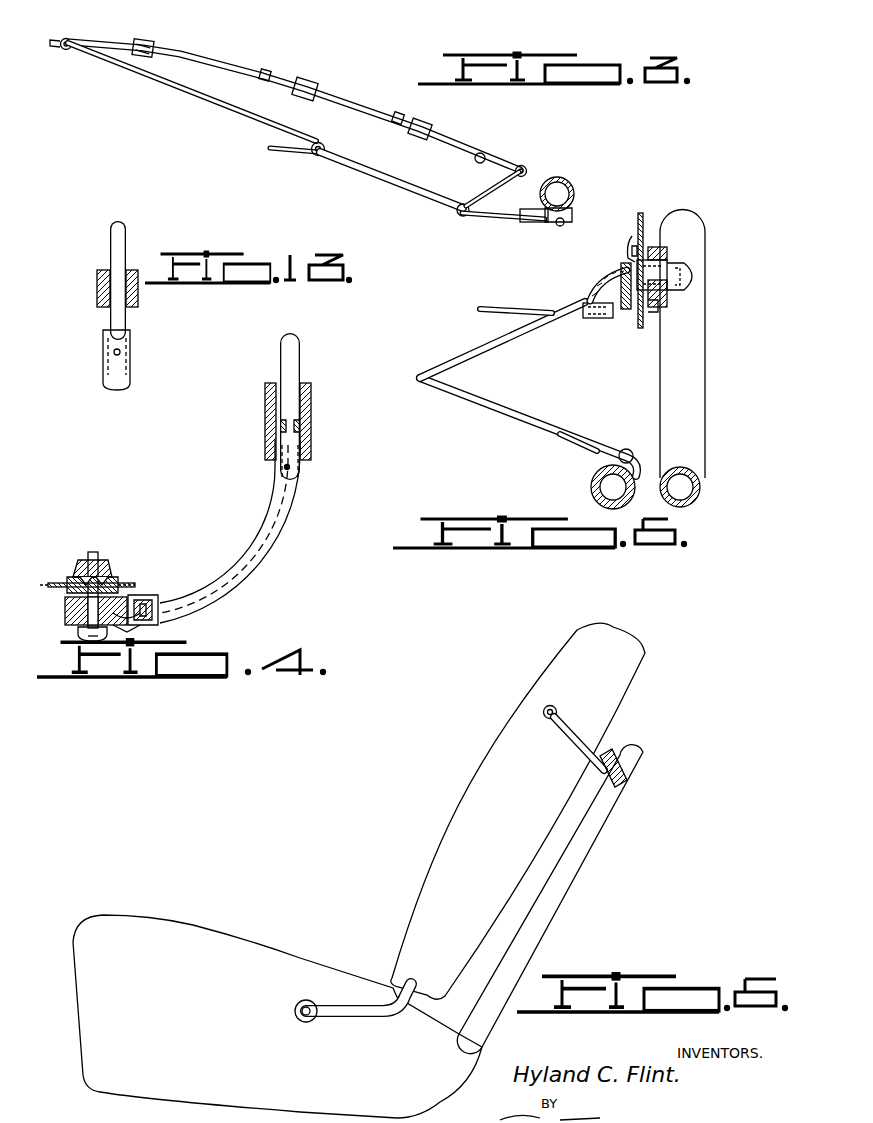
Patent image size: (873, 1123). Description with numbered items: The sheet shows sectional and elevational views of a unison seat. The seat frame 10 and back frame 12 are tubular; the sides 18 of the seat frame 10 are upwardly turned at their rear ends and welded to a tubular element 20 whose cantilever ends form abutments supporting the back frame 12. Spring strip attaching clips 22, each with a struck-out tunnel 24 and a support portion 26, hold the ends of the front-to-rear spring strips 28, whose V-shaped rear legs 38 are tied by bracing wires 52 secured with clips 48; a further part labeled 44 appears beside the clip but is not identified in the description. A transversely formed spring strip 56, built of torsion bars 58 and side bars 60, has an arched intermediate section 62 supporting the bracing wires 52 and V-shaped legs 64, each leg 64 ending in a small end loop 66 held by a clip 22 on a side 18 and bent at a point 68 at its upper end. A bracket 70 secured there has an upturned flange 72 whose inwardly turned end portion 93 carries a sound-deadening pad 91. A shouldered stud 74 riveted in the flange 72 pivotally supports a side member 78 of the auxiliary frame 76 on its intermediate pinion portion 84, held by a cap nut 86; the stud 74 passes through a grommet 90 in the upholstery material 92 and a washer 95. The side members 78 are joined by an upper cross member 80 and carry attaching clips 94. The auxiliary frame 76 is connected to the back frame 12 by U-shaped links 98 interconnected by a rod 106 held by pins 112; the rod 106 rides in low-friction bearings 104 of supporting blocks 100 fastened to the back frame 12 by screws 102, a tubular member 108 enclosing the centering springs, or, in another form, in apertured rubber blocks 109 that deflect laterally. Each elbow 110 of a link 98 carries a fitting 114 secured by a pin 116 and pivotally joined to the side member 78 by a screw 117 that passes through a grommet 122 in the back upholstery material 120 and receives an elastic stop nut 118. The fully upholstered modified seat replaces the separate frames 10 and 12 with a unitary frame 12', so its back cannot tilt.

In FIG. 5, the seat frame 10 is at (588, 492).
In FIG. 5, the back frame 12 is at (725, 344).
In FIG. 6, the unitary frame 12' is at (550, 899).
In FIG. 5, the sides of the seat frame 18 is at (591, 478).
In FIG. 3, the tubular element 20 is at (554, 180).
In FIG. 3, the spring strip attaching clips 22 is at (577, 211).
In FIG. 5, the spring strip attaching clips 22 is at (637, 473).
In FIG. 3, the tunnel 24 is at (554, 221).
In FIG. 5, the tunnel 24 is at (630, 446).
In FIG. 5, the support portion 26 is at (588, 450).
In FIG. 3, the spring strips 28 is at (241, 66).
In FIG. 3, the V-shaped rear leg 38 is at (497, 214).
In FIG. 3, the coupling 44 is at (540, 224).
In FIG. 3, the clips 48 is at (142, 42).
In FIG. 3, the bracing wires 52 is at (200, 100).
In FIG. 3, the transversely formed wire spring strip 56 is at (275, 159).
In FIG. 5, the transversely formed wire spring strip 56 is at (488, 320).
In FIG. 3, the torsion bars 58 is at (292, 162).
In FIG. 3, the side bars 60 is at (333, 148).
In FIG. 5, the side bars 60 is at (552, 331).
In FIG. 3, the intermediate section 62 is at (280, 147).
In FIG. 5, the intermediate section 62 is at (513, 307).
In FIG. 5, the V-shaped legs 64 is at (470, 412).
In FIG. 5, the small end loop 66 is at (607, 448).
In FIG. 5, the bend 68 is at (582, 306).
In FIG. 5, the bracket 70 is at (617, 297).
In FIG. 5, the upturned flange 72 is at (621, 298).
In FIG. 5, the shouldered stud 74 is at (665, 270).
In FIG. 5, the auxiliary frame 76 is at (662, 216).
In FIG. 4, the side members 78 is at (112, 577).
In FIG. 6, the side members 78 is at (345, 1022).
In FIG. 5, the upper U-shaped cross member 80 is at (668, 300).
In FIG. 5, the intermediate pinion portion 84 is at (670, 221).
In FIG. 5, the cap nut 86 is at (699, 276).
In FIG. 6, the cap nut 86 is at (297, 1017).
In FIG. 5, the grommet 90 is at (632, 238).
In FIG. 5, the pad 91 is at (657, 308).
In FIG. 5, the upholstery material 92 is at (644, 215).
In FIG. 5, the inwardly turned end portion 93 is at (634, 241).
In FIG. 6, the attaching clips 94 is at (295, 1010).
In FIG. 5, the washer 95 is at (659, 262).
In FIG. 13, the U-shaped link 98 is at (133, 345).
In FIG. 4, the U-shaped link 98 is at (304, 512).
In FIG. 6, the U-shaped link 98 is at (574, 741).
In FIG. 4, the supporting blocks 100 is at (312, 410).
In FIG. 6, the supporting blocks 100 is at (606, 775).
In FIG. 4, the screws 102 is at (312, 428).
In FIG. 4, the bearings 104 is at (266, 407).
In FIG. 13, the rod 106 is at (123, 245).
In FIG. 4, the rod 106 is at (286, 353).
In FIG. 4, the tubular member 108 is at (266, 455).
In FIG. 13, the rubber blocks 109 is at (97, 286).
In FIG. 13, the elbow 110 is at (102, 368).
In FIG. 4, the elbow 110 is at (262, 574).
In FIG. 4, the pins 112 is at (312, 470).
In FIG. 4, the fitting 114 is at (65, 616).
In FIG. 4, the pin 116 is at (138, 594).
In FIG. 4, the screw 117 is at (114, 614).
In FIG. 4, the elastic stop nut 118 is at (99, 553).
In FIG. 4, the upholstery material of the back 120 is at (58, 583).
In FIG. 6, the upholstery material of the back 120 is at (598, 702).
In FIG. 4, the grommet 122 is at (114, 578).